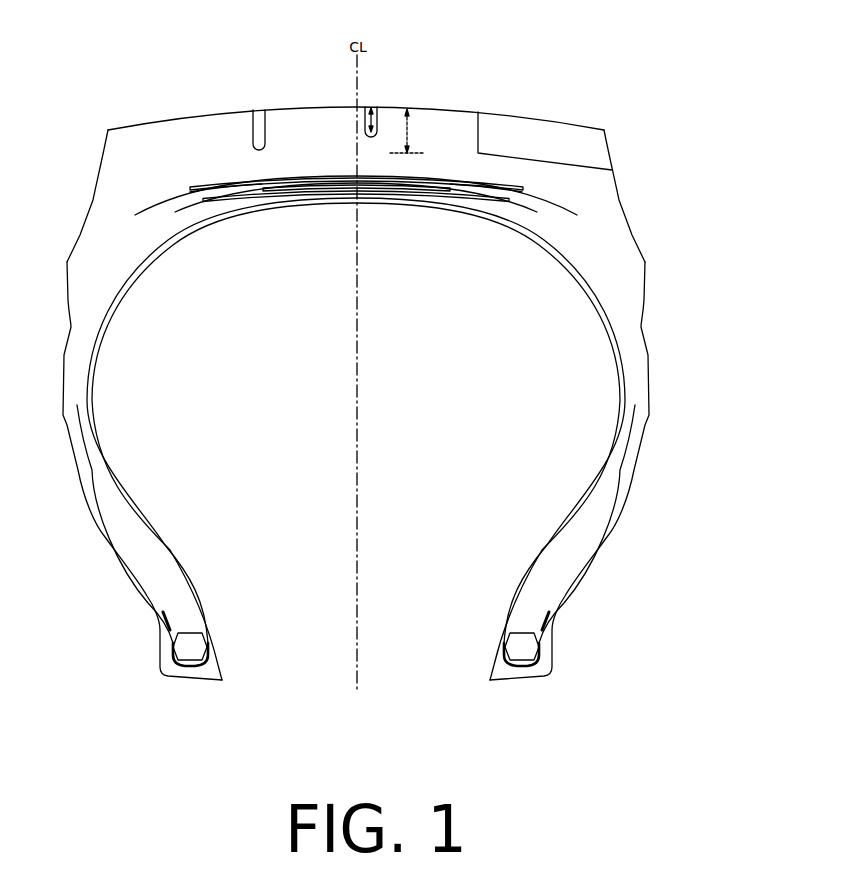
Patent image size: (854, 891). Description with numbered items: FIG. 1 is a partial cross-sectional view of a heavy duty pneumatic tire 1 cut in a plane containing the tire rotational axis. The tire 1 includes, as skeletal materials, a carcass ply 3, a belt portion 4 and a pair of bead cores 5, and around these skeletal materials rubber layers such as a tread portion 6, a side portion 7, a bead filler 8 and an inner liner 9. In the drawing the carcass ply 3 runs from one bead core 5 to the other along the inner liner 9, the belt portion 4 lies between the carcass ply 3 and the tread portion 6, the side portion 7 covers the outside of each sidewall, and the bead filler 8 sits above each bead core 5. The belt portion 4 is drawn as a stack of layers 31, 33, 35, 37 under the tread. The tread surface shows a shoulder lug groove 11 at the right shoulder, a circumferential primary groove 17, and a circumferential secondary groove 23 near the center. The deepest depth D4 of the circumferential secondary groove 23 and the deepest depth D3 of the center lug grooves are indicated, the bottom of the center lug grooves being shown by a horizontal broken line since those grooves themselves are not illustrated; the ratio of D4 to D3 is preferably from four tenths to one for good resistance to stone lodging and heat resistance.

The heavy duty pneumatic tire 1 is at (597, 63).
The carcass ply 3 is at (610, 342).
The belt portion 4 is at (586, 232).
The bead cores 5 is at (192, 650).
The tread portion 6 is at (603, 130).
The side portion 7 is at (647, 378).
The bead filler 8 is at (527, 610).
The inner liner 9 is at (613, 453).
The shoulder lug grooves 11 is at (519, 127).
The circumferential primary groove 17 is at (257, 113).
The circumferential secondary grooves 23 is at (366, 110).
The first belt layer 31 is at (507, 200).
The second belt layer 33 is at (432, 190).
The belt edge cover 35 is at (199, 191).
The belt cover layer 37 is at (297, 189).
The deepest depth of center lug grooves D3 is at (416, 128).
The deepest depth of circumferential secondary grooves D4 is at (377, 114).